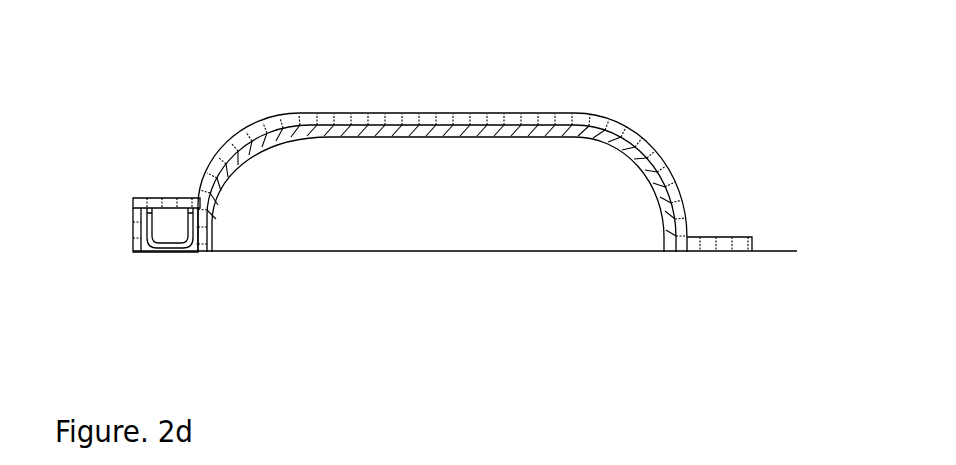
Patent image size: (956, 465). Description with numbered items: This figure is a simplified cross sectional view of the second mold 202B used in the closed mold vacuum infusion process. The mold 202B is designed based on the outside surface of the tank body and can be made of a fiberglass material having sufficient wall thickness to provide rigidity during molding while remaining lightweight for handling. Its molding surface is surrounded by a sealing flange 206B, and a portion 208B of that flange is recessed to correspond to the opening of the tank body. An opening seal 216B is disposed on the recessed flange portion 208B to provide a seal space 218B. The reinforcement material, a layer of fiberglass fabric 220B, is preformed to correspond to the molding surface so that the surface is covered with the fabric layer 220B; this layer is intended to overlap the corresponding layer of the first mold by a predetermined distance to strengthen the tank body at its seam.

The mold 202B is at (495, 114).
The fabric layer 220B is at (662, 218).
The sealing flange 206B is at (725, 239).
The recessed flange portion 208B is at (175, 202).
The opening seal 216B is at (140, 235).
The seal space 218B is at (170, 232).